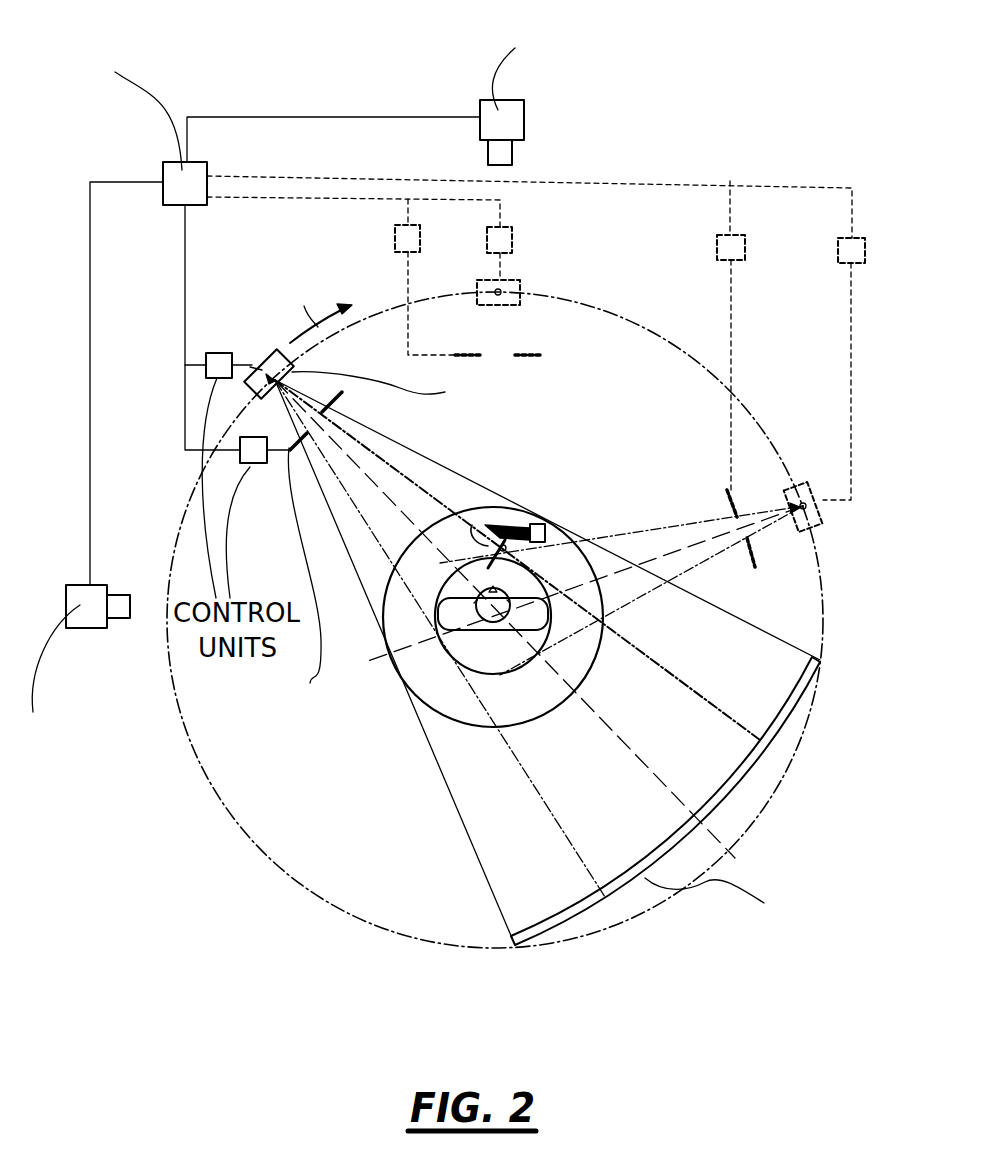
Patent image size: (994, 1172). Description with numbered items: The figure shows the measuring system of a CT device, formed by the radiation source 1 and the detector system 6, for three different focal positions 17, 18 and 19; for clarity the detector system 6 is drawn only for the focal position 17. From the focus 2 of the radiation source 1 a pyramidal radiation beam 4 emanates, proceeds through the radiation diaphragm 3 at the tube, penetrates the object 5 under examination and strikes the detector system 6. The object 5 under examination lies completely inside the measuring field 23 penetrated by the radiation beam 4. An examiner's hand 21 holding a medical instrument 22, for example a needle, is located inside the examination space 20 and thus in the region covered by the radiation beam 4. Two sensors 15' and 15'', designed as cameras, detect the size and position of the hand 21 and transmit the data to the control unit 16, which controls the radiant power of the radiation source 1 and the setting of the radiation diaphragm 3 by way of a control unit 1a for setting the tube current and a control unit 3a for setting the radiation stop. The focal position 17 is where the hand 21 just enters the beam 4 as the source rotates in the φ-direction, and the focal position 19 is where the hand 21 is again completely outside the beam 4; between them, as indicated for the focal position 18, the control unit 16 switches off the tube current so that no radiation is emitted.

The radiation source 1 is at (298, 369).
The control unit for setting the tube current 1a is at (217, 353).
The focus 2 is at (257, 383).
The radiation diaphragm 3 is at (346, 401).
The control unit for setting the radiation stop 3a is at (251, 464).
The radiation beam 4 is at (361, 520).
The object under examination 5 is at (538, 617).
The detector system 6 is at (661, 854).
The sensor 15' is at (74, 668).
The sensor 15'' is at (533, 94).
The control unit 16 is at (174, 162).
The focal position 17 is at (249, 316).
The focal position 18 is at (535, 239).
The focal position 19 is at (837, 516).
The examination space 20 is at (443, 717).
The examiner's hand 21 is at (538, 523).
The medical instrument 22 is at (472, 525).
The measuring field 23 is at (490, 673).